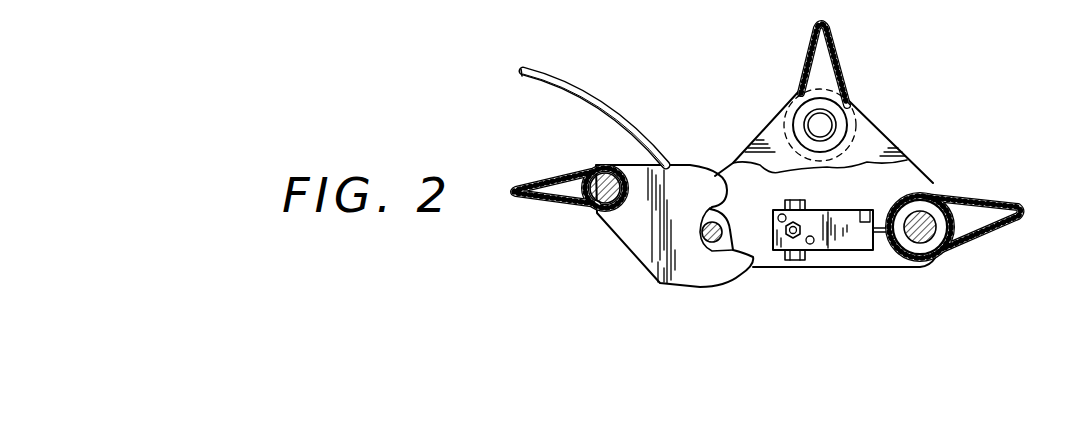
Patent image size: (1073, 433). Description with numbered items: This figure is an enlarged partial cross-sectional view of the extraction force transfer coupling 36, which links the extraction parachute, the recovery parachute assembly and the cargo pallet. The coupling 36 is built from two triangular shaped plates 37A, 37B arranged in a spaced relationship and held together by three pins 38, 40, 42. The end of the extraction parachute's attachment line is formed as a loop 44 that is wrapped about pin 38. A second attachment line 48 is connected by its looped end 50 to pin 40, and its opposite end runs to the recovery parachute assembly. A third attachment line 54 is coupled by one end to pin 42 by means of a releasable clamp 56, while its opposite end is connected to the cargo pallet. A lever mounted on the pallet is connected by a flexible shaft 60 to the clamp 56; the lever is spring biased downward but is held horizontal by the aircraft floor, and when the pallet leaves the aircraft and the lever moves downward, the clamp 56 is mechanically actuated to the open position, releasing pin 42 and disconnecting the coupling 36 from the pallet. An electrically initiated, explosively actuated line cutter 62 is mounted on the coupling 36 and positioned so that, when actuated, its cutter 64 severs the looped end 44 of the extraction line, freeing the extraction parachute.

The extraction force transfer coupling 36 is at (968, 72).
The triangular shaped plate 37A is at (887, 143).
The triangular shaped plate 37B is at (930, 177).
The pin 38 is at (942, 263).
The pin 40 is at (850, 112).
The pin 42 is at (604, 185).
The loop 44 is at (1017, 235).
The attachment line 48 is at (806, 43).
The looped end 50 is at (845, 78).
The attachment line 54 is at (549, 210).
The releasable clamp 56 is at (685, 162).
The flexible shaft 60 is at (568, 80).
The line cutter 62 is at (820, 252).
The cutter 64 is at (885, 255).